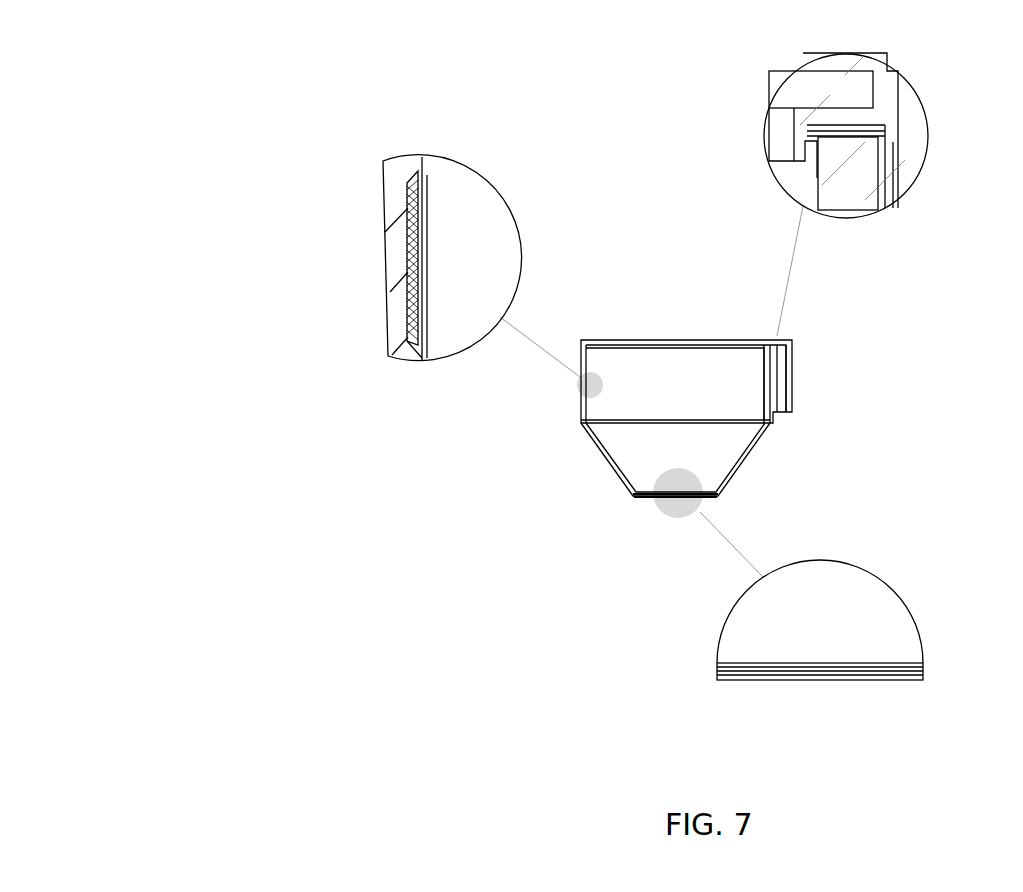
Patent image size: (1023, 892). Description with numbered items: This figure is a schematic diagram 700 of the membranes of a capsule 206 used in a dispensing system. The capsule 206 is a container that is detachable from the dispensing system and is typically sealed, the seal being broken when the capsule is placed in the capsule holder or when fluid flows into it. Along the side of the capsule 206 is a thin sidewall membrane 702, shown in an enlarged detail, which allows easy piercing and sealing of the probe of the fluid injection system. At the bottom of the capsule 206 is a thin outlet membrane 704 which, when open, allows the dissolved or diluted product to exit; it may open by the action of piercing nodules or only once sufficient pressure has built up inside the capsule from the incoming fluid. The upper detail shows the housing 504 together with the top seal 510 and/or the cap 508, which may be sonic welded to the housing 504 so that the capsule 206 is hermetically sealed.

The luminaire assembly 700 is at (252, 50).
The capsule 206 is at (607, 450).
The thin sidewall membrane 702 is at (420, 228).
The top seal 510 is at (889, 135).
The cap 508 is at (888, 95).
The housing 504 is at (878, 190).
The thin outlet membrane 704 is at (827, 676).